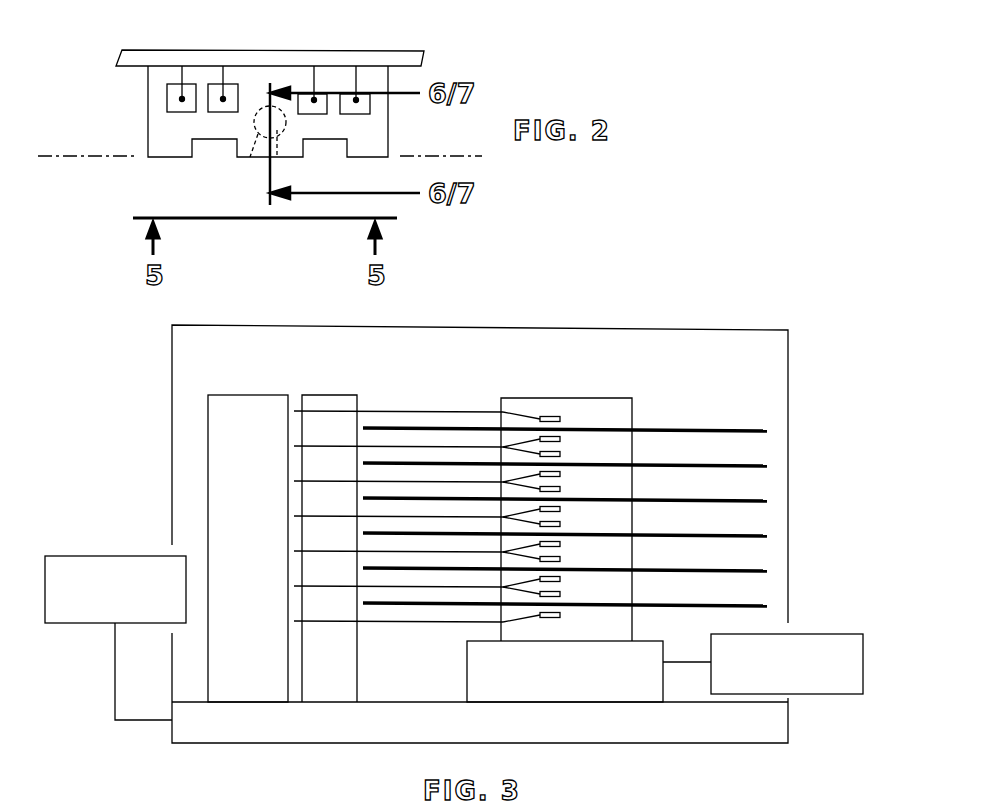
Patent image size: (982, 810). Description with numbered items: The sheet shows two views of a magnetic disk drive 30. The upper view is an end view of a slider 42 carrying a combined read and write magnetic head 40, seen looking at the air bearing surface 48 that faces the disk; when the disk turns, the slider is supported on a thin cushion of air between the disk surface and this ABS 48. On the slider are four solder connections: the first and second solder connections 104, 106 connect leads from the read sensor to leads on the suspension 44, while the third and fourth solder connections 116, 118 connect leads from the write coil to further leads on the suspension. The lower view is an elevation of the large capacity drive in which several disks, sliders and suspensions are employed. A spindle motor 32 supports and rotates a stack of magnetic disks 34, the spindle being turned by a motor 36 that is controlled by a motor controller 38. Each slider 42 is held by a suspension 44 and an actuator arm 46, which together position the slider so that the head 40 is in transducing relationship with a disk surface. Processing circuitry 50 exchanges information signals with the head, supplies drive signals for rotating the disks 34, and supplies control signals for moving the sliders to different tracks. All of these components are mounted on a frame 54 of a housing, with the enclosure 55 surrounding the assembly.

In FIG. 3, the magnetic disk drive 30 is at (685, 398).
In FIG. 3, the spindle motor 32 is at (621, 398).
In FIG. 3, the magnetic disk 34 is at (769, 432).
In FIG. 3, the motor 36 is at (580, 684).
In FIG. 3, the motor controller 38 is at (820, 694).
In FIG. 2, the magnetic head 40 is at (253, 162).
In FIG. 2, the slider 42 is at (148, 97).
In FIG. 3, the slider 42 is at (562, 438).
In FIG. 3, the suspension 44 is at (535, 448).
In FIG. 3, the actuator arm 46 is at (470, 445).
In FIG. 2, the air bearing surface 48 is at (63, 158).
In FIG. 3, the processing circuitry 50 is at (88, 556).
In FIG. 3, the frame 54 is at (222, 743).
In FIG. 3, the housing 55 is at (730, 330).
In FIG. 2, the first solder connection 104 is at (168, 84).
In FIG. 2, the second solder connection 106 is at (341, 94).
In FIG. 2, the third solder connection 116 is at (210, 84).
In FIG. 2, the fourth solder connection 118 is at (300, 94).